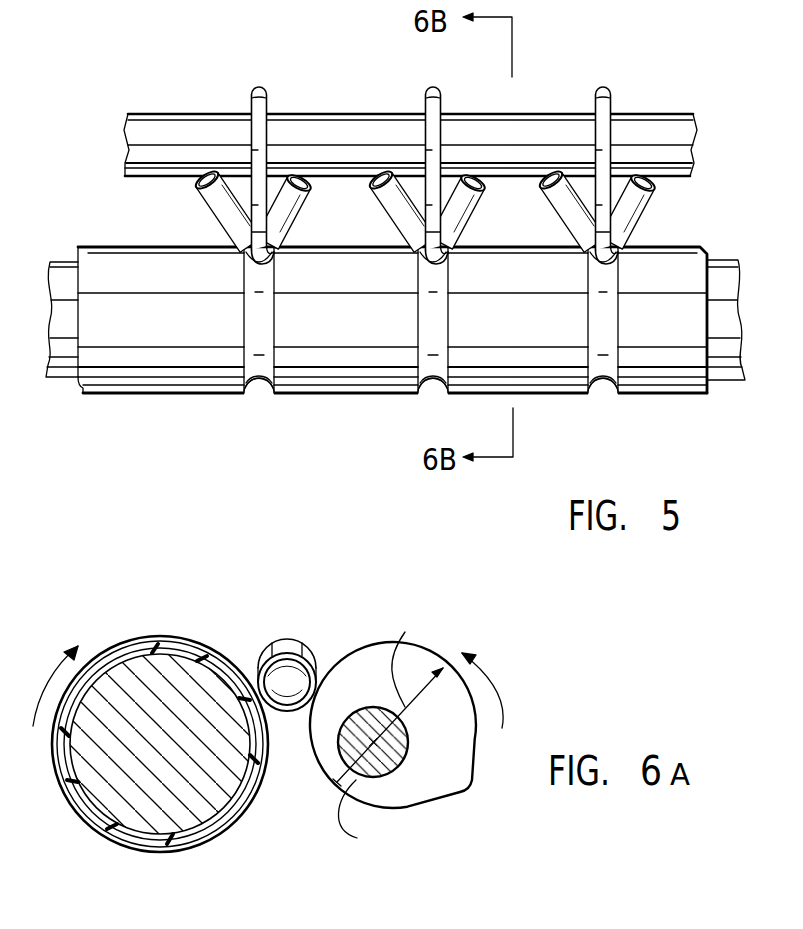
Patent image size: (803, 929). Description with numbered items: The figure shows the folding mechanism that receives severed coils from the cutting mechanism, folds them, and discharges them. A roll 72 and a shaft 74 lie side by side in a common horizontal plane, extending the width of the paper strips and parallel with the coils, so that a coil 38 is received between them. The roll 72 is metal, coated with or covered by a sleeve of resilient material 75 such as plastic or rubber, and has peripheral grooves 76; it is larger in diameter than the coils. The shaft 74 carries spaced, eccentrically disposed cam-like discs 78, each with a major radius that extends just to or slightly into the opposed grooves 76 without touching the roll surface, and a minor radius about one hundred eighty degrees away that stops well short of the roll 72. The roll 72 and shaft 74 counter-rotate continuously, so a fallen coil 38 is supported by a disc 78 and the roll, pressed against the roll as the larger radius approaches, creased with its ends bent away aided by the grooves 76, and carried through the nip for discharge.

In FIG. 5, the coil 38 is at (657, 218).
In FIG. 6A, the coil 38 is at (283, 652).
In FIG. 5, the roll 72 is at (128, 262).
In FIG. 6A, the roll 72 is at (197, 807).
In FIG. 5, the shaft 74 is at (152, 122).
In FIG. 6A, the resilient material 75 is at (153, 837).
In FIG. 5, the peripheral grooves 76 is at (257, 396).
In FIG. 6A, the peripheral grooves 76 is at (123, 838).
In FIG. 5, the cam-like discs 78 is at (262, 88).
In FIG. 6A, the cam-like discs 78 is at (452, 782).